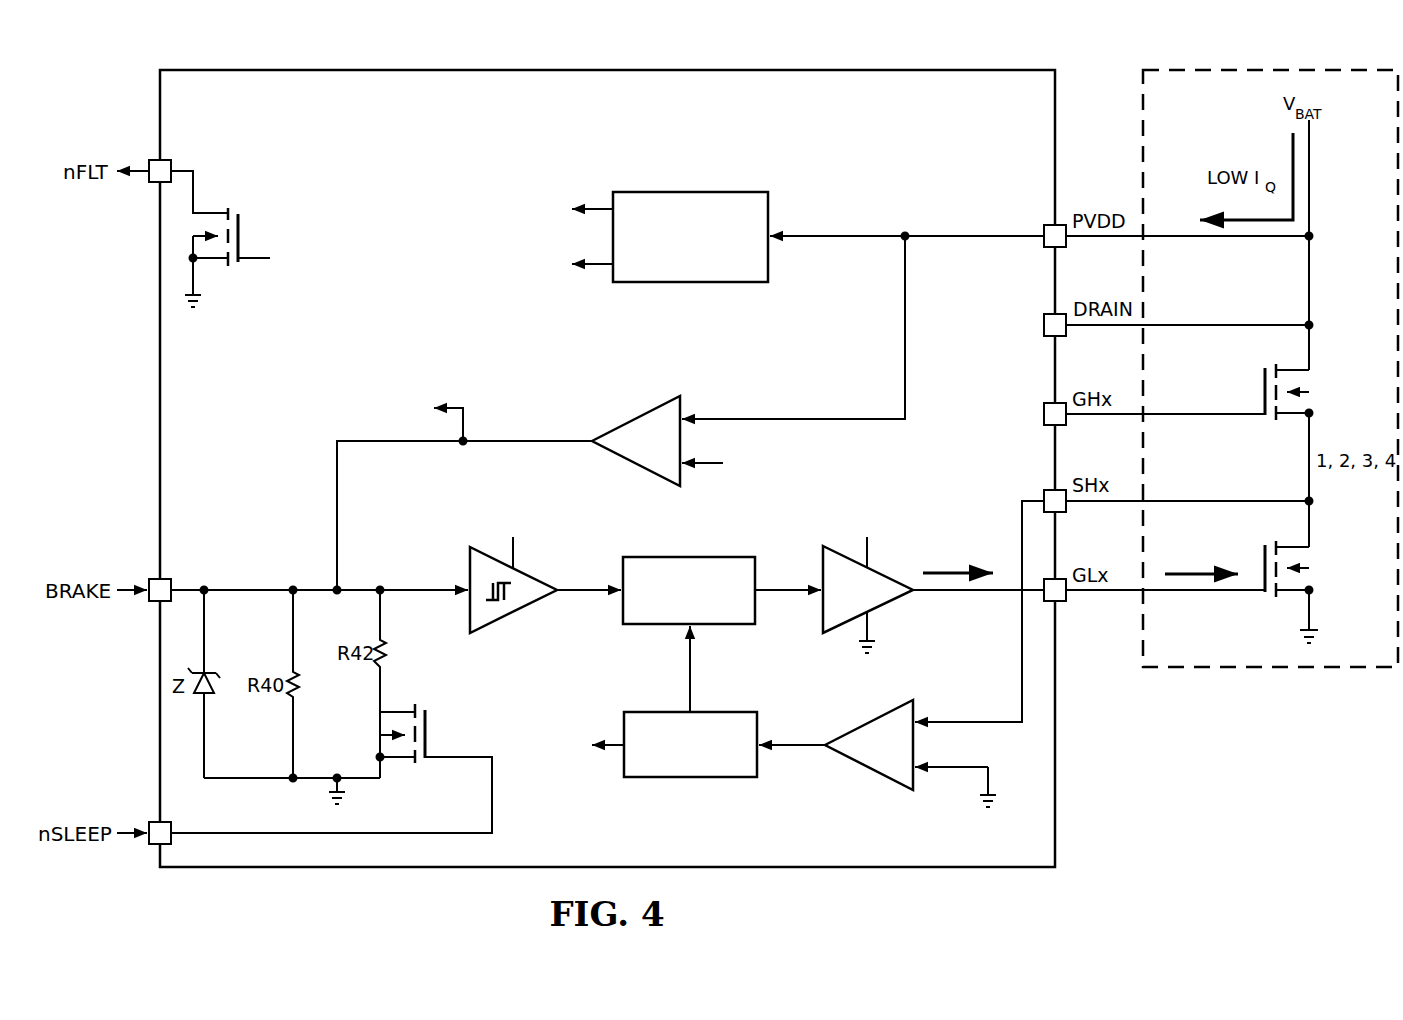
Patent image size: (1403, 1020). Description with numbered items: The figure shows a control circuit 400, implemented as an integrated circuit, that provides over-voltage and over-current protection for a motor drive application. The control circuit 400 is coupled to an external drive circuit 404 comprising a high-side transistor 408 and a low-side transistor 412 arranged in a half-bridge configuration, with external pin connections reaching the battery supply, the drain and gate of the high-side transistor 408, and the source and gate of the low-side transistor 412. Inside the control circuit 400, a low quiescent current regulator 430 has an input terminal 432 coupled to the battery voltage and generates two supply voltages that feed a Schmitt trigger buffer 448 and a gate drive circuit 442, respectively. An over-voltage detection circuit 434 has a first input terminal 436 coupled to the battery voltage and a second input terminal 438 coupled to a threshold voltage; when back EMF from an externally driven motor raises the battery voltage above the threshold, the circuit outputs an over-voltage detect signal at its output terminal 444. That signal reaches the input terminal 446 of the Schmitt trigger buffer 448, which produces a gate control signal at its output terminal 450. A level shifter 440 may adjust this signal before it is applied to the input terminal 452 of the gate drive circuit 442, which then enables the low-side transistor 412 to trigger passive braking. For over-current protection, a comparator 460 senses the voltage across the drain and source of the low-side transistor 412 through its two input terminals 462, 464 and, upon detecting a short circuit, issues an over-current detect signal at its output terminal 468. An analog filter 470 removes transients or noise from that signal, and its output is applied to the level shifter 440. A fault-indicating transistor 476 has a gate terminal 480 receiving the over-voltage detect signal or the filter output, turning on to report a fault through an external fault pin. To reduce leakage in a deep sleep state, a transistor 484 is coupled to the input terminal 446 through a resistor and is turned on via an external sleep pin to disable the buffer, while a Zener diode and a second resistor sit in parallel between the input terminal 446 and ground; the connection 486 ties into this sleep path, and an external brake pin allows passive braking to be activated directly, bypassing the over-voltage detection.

The control circuit 400 is at (453, 68).
The drive circuit 404 is at (1310, 66).
The high-side transistor 408 is at (1260, 380).
The low-side transistor 412 is at (1260, 555).
The low quiescent current (IQ) regulator 430 is at (690, 190).
The input terminal 432 is at (793, 230).
The over-voltage detection circuit 434 is at (643, 419).
The first input terminal 436 is at (705, 414).
The second input terminal 438 is at (706, 466).
The level shifter 440 is at (725, 627).
The gate drive circuit 442 is at (893, 600).
The output terminal 444 is at (575, 445).
The input terminal 446 is at (440, 597).
The Schmitt trigger buffer 448 is at (540, 578).
The output terminal 450 is at (597, 597).
The input terminal 452 is at (802, 597).
The comparator 460 is at (866, 720).
The input terminal 462 is at (940, 718).
The input terminal 464 is at (938, 771).
The output terminal 468 is at (784, 748).
The analog filter 470 is at (669, 760).
The transistor 476 is at (245, 222).
The gate terminal 480 is at (246, 262).
The transistor 484 is at (432, 720).
The transistor connection to nSLEEP 486 is at (432, 760).